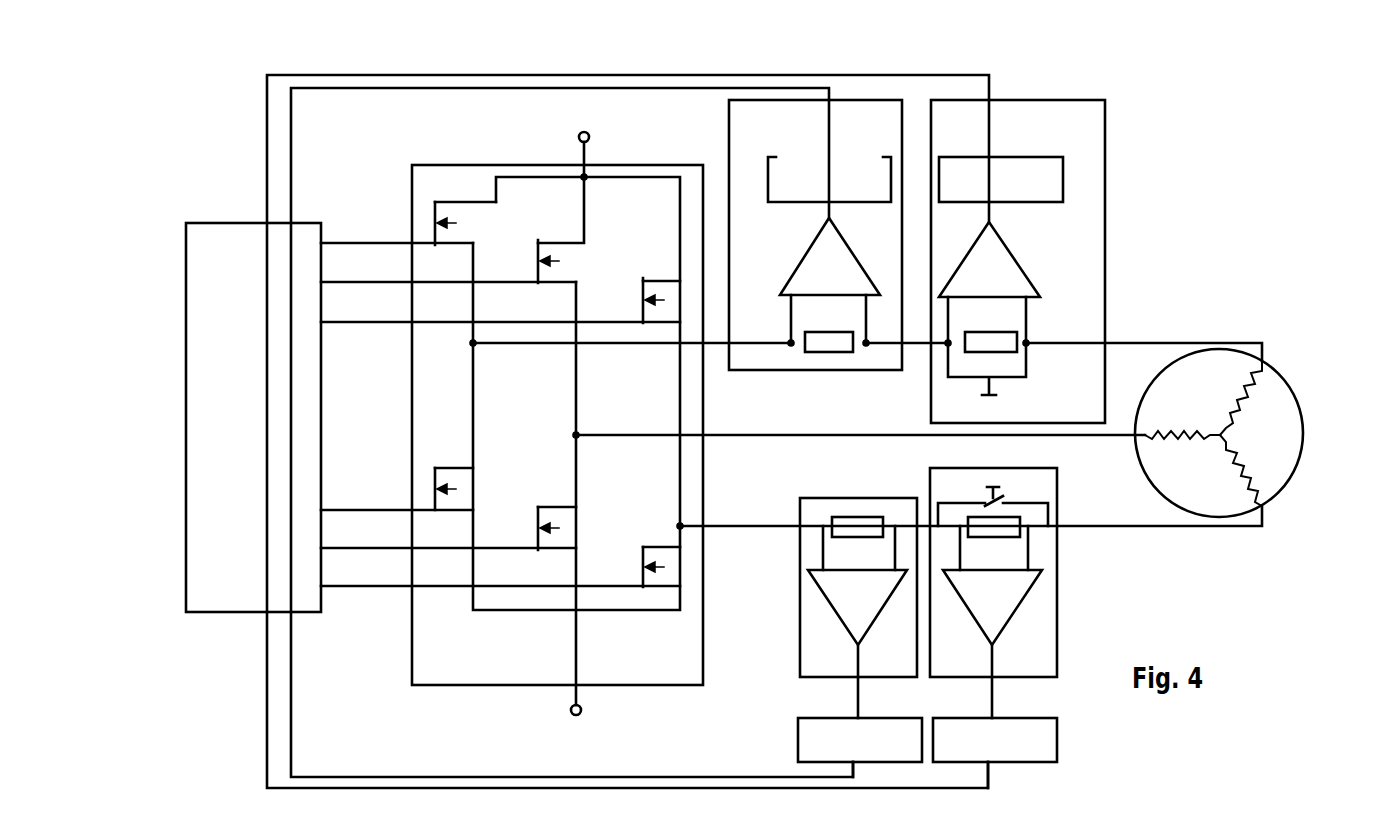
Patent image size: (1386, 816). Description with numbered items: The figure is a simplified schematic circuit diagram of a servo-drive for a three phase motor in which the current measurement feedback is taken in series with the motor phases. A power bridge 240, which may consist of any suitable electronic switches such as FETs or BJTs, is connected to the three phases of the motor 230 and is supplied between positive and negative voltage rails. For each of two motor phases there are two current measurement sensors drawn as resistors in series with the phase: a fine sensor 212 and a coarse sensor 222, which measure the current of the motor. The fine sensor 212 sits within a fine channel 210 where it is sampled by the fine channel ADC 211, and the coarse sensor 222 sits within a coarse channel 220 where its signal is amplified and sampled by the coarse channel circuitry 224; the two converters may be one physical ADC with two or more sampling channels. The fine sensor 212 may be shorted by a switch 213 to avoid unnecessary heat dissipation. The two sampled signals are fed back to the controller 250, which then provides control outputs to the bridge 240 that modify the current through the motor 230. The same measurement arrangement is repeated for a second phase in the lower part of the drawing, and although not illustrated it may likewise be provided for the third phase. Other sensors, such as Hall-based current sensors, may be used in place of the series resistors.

The fine channel 210 is at (1061, 261).
The fine channel ADC 211 is at (1010, 203).
The fine sensor 212 is at (1023, 337).
The switch 213 is at (1008, 380).
The coarse channel 220 is at (772, 235).
The coarse sensor 222 is at (791, 333).
The coarse sensor amplifier 224 is at (822, 207).
The motor 230 is at (1268, 368).
The bridge 240 is at (462, 686).
The controller 250 is at (244, 222).